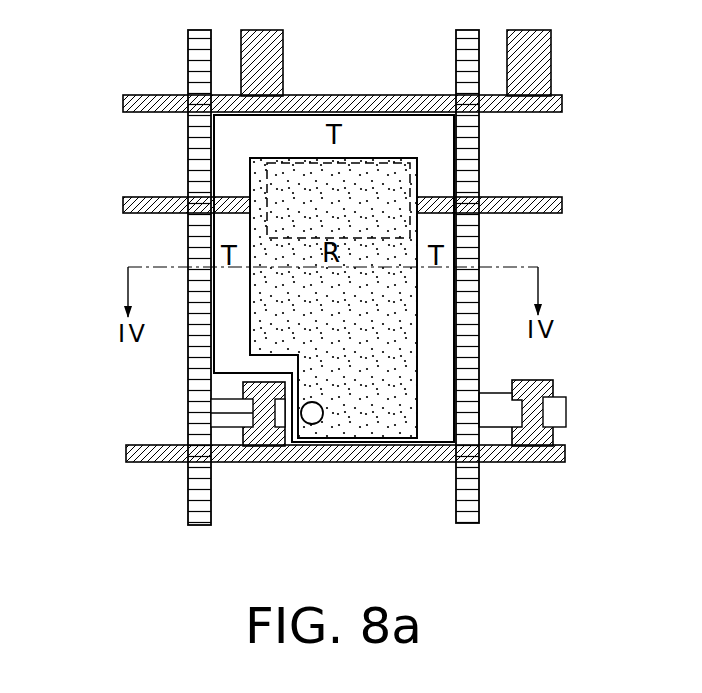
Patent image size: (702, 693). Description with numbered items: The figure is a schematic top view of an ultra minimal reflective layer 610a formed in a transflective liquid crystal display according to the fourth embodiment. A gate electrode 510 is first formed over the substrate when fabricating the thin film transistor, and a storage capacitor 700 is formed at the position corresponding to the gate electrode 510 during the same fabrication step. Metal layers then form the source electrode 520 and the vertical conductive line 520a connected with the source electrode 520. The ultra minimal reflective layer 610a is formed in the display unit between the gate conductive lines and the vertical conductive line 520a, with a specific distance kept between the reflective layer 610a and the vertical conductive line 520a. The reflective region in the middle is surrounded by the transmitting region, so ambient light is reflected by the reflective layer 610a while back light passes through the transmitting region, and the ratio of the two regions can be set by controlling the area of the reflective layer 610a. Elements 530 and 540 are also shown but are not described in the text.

The gate electrode 510 is at (267, 436).
The source electrode 520 is at (226, 409).
The vertical conductive line 520a is at (192, 248).
The contact hole 530 is at (306, 428).
The pixel electrode 540 is at (371, 445).
The ultra minimal reflective layer 610a is at (263, 343).
The storage capacitor 700 is at (292, 217).